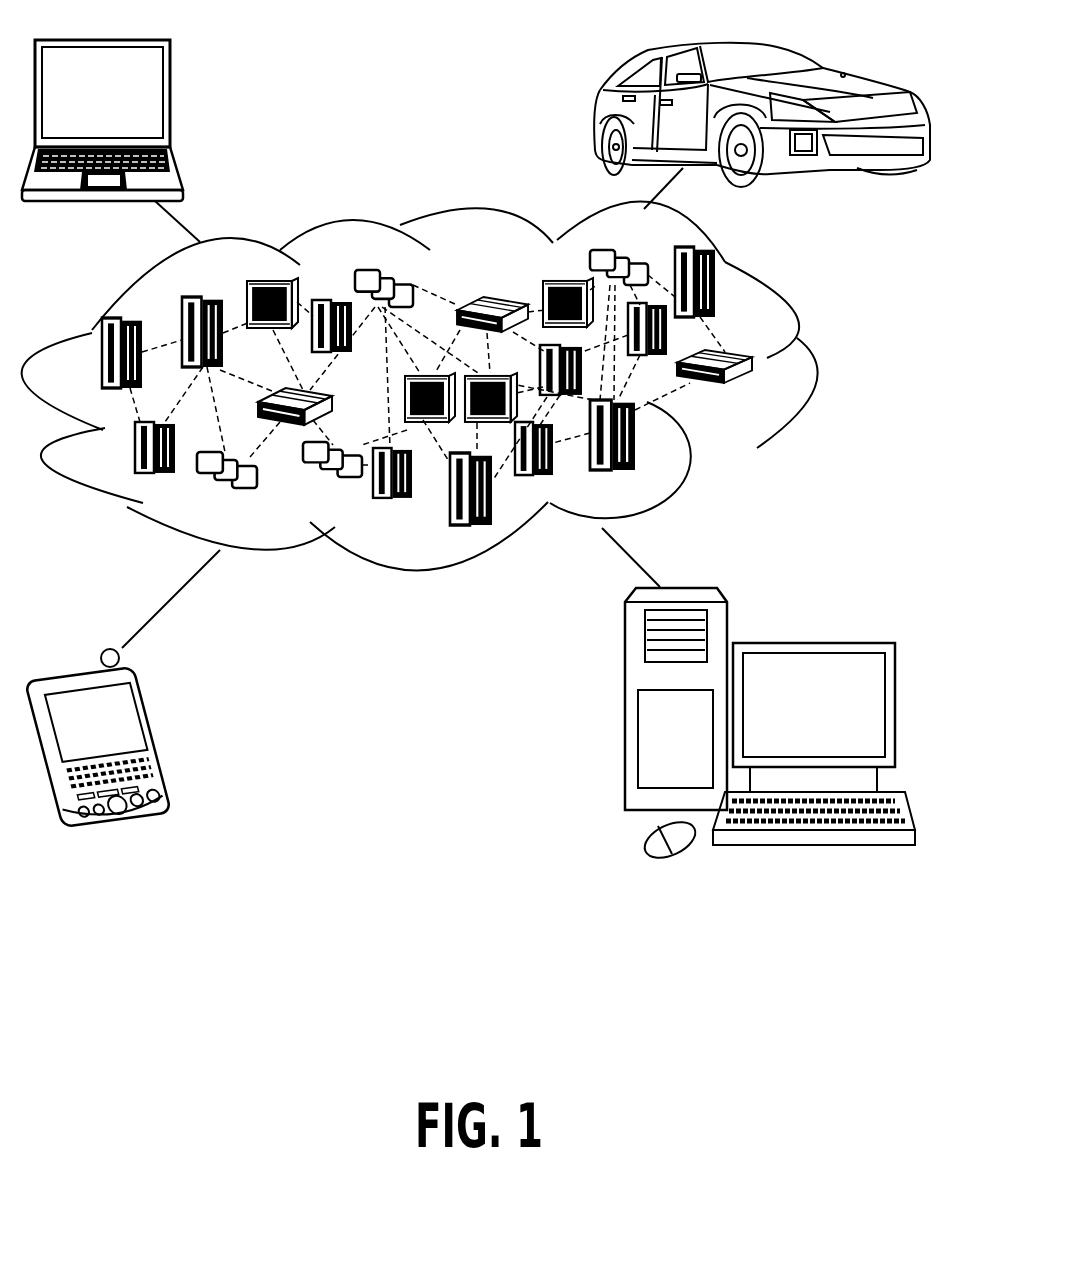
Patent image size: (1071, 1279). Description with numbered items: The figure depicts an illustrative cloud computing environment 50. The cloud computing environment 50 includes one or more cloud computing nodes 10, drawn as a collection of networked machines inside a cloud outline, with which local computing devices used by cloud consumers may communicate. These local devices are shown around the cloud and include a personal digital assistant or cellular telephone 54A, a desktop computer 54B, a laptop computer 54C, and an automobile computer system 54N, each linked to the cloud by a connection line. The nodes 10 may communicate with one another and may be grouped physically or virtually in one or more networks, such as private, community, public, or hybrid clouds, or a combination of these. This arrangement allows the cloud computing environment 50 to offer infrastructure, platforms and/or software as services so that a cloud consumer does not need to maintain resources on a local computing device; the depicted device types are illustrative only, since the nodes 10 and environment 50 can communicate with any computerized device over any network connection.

The cloud computing node 10 is at (753, 392).
The cloud computing environment 50 is at (812, 363).
The personal digital assistant (PDA) or cellular telephone 54A is at (160, 738).
The desktop computer 54B is at (811, 641).
The laptop computer 54C is at (172, 101).
The automobile computer system 54N is at (598, 118).